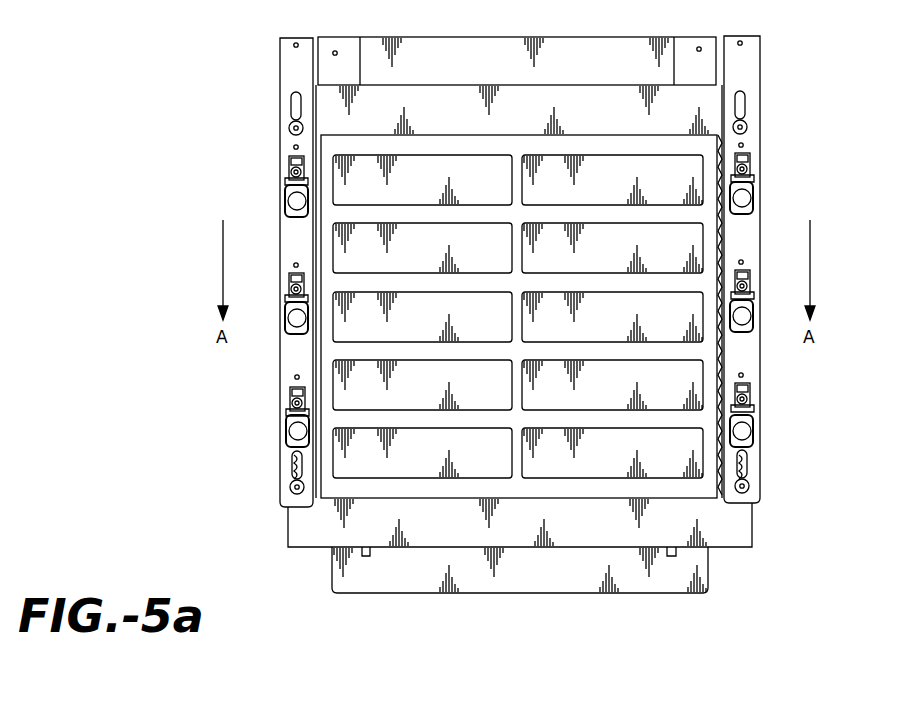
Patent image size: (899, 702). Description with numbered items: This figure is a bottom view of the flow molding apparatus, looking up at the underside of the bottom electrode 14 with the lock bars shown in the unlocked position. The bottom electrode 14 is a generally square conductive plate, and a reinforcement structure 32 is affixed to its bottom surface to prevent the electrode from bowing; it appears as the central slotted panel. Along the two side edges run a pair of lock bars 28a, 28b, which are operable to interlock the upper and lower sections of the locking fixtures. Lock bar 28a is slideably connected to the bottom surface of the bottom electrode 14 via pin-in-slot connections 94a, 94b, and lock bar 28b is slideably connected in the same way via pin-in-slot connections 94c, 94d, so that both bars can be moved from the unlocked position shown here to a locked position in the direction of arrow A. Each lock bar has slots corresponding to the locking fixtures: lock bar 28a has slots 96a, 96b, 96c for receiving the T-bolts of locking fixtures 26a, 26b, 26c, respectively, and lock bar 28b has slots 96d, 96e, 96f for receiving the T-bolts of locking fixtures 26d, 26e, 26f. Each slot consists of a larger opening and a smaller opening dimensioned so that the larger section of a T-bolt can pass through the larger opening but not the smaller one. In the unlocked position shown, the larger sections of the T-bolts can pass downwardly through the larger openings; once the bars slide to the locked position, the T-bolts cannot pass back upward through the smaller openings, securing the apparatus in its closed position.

The bottom electrode 14 is at (578, 102).
The reinforcement structure 32 is at (608, 177).
The lock bar 28a is at (760, 375).
The lock bar 28b is at (279, 377).
The locking fixture 26a is at (742, 200).
The locking fixture 26b is at (742, 316).
The locking fixture 26c is at (742, 431).
The locking fixture 26d is at (287, 203).
The locking fixture 26e is at (288, 318).
The locking fixture 26f is at (290, 432).
The slot 96a is at (749, 168).
The slot 96b is at (749, 285).
The slot 96c is at (749, 398).
The slot 96d is at (288, 177).
The slot 96e is at (290, 288).
The slot 96f is at (289, 401).
The pin-in-slot connection 94a is at (748, 127).
The pin-in-slot connection 94b is at (749, 486).
The pin-in-slot connection 94c is at (289, 128).
The pin-in-slot connection 94d is at (290, 487).